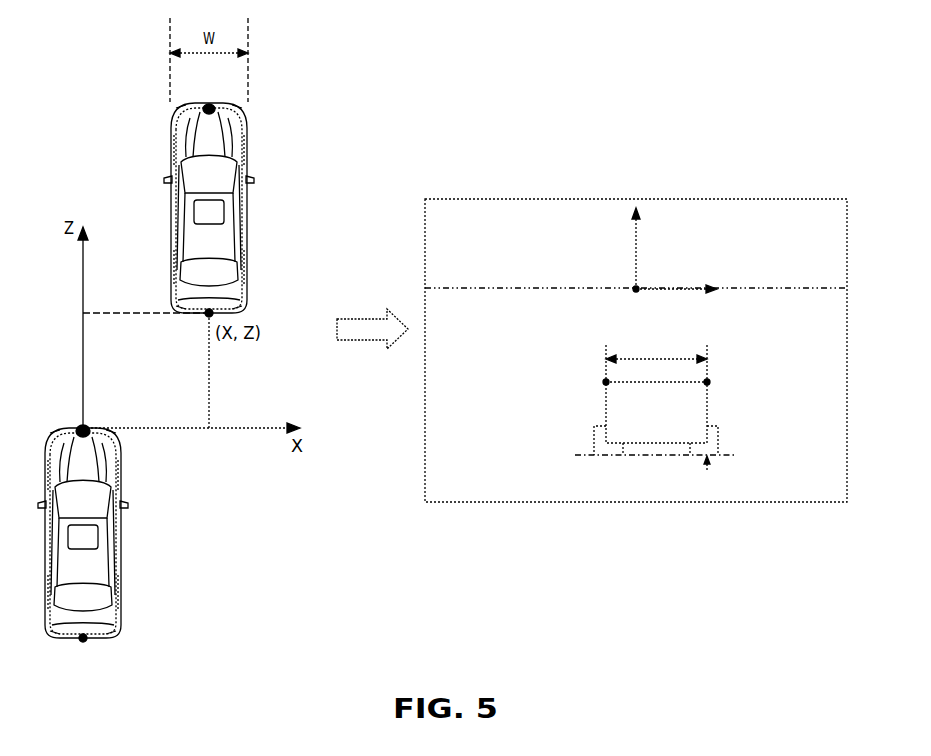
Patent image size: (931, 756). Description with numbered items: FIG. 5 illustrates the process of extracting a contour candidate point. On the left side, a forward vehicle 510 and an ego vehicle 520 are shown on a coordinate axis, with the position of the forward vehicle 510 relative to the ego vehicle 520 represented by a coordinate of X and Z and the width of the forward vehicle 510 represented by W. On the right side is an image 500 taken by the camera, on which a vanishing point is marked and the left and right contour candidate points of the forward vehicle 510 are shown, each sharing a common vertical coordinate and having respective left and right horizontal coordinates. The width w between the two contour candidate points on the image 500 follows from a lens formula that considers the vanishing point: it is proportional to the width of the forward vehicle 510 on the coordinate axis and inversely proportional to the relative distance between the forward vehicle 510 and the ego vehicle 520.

The image 500 is at (805, 199).
The forward vehicle 510 is at (250, 135).
The ego vehicle 520 is at (125, 468).